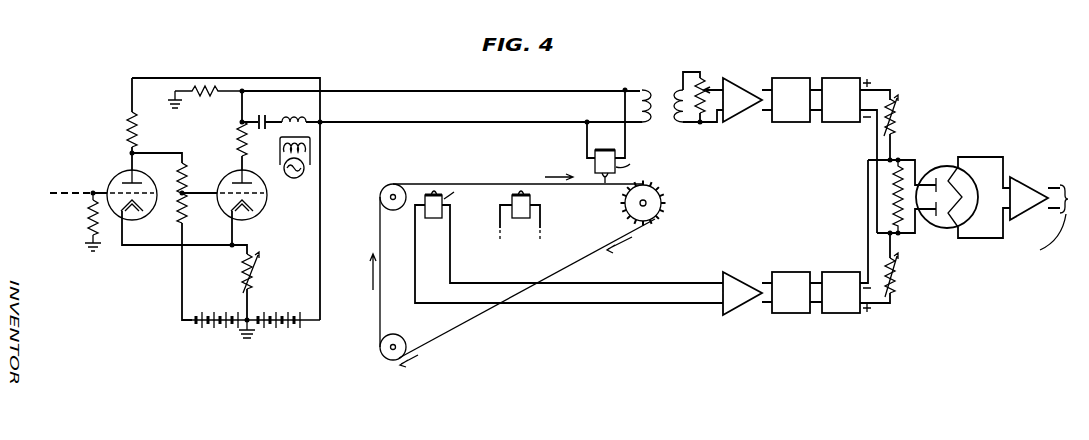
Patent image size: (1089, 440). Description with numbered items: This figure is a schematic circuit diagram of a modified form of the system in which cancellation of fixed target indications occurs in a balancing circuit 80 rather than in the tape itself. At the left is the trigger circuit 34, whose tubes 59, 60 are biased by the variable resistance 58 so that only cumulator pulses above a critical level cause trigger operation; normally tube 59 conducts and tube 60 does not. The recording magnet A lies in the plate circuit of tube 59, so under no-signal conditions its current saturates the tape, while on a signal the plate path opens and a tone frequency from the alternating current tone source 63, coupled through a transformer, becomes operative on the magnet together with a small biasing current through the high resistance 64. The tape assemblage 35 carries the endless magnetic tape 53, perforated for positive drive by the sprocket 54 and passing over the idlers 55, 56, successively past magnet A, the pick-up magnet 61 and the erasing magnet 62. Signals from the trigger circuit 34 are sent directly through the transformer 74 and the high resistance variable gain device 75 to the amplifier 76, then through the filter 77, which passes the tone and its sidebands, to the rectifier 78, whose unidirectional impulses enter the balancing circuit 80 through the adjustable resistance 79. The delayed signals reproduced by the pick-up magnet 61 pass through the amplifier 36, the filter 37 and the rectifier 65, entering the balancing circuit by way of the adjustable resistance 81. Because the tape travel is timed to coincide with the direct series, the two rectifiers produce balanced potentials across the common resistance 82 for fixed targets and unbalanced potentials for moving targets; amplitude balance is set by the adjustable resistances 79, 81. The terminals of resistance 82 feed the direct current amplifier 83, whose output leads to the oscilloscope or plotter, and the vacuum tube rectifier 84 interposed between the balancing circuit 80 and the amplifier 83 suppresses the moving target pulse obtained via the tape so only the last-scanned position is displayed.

The trigger circuit 34 is at (236, 69).
The tape mechanism assemblage 35 is at (456, 162).
The amplifier 36 is at (737, 313).
The filter 37 is at (789, 313).
The magnetic tape 53 is at (447, 334).
The sprocket 54 is at (656, 186).
The idler 55 is at (380, 352).
The idler 56 is at (394, 184).
The variable resistance 58 is at (256, 283).
The trigger tube 59 is at (265, 208).
The tube 60 is at (120, 173).
The pick-up magnet 61 is at (441, 219).
The erasing magnet 62 is at (531, 199).
The alternating current tone source 63 is at (304, 168).
The high resistance 64 is at (193, 88).
The rectifier 65 is at (850, 313).
The transformer 74 is at (668, 87).
The high resistance variable gain device 75 is at (706, 80).
The amplifier 76 is at (741, 80).
The filter 77 is at (803, 79).
The rectifier 78 is at (854, 79).
The adjustable resistance 79 is at (901, 112).
The balancing circuit 80 is at (967, 112).
The adjustable resistance 81 is at (898, 283).
The common resistance 82 is at (904, 227).
The direct current amplifier 83 is at (1029, 177).
The vacuum tube rectifier 84 is at (960, 178).